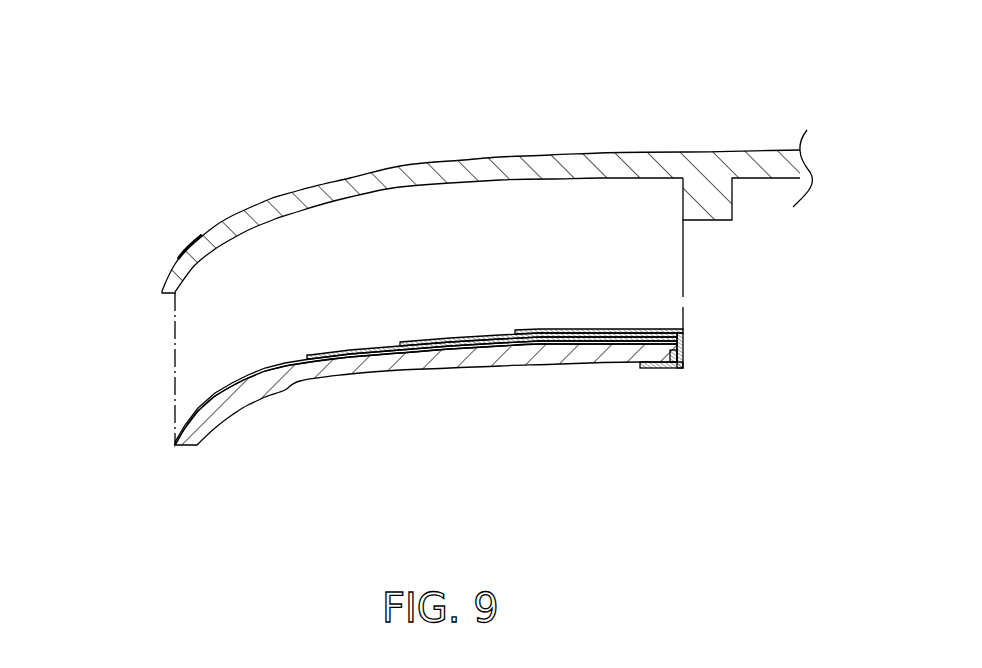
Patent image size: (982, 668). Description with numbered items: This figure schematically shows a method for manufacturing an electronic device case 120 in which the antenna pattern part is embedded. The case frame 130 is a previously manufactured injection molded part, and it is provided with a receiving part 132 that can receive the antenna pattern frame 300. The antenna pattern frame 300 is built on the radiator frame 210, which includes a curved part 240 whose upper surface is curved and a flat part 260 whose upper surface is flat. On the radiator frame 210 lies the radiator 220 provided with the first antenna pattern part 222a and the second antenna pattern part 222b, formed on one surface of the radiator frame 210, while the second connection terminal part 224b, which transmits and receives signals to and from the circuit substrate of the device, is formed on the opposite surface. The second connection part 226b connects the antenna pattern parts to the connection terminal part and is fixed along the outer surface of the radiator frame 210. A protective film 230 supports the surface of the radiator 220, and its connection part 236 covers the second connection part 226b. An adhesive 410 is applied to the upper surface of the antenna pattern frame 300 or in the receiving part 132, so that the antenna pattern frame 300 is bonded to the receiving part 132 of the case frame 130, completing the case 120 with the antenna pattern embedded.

The case 120 is at (730, 127).
The case frame 130 is at (411, 176).
The receiving part 132 is at (228, 237).
The radiator frame 210 is at (426, 429).
The radiator 220 is at (492, 354).
The first antenna pattern part 222a is at (357, 351).
The second antenna pattern part 222b is at (505, 332).
The second connection terminal part 224b is at (657, 368).
The second connection part 226b is at (682, 358).
The protective film 230 is at (638, 330).
The connection part 236 is at (684, 341).
The curved part 240 is at (393, 476).
The flat part 260 is at (383, 372).
The antenna pattern frame 300 is at (479, 373).
The adhesive 410 is at (232, 387).